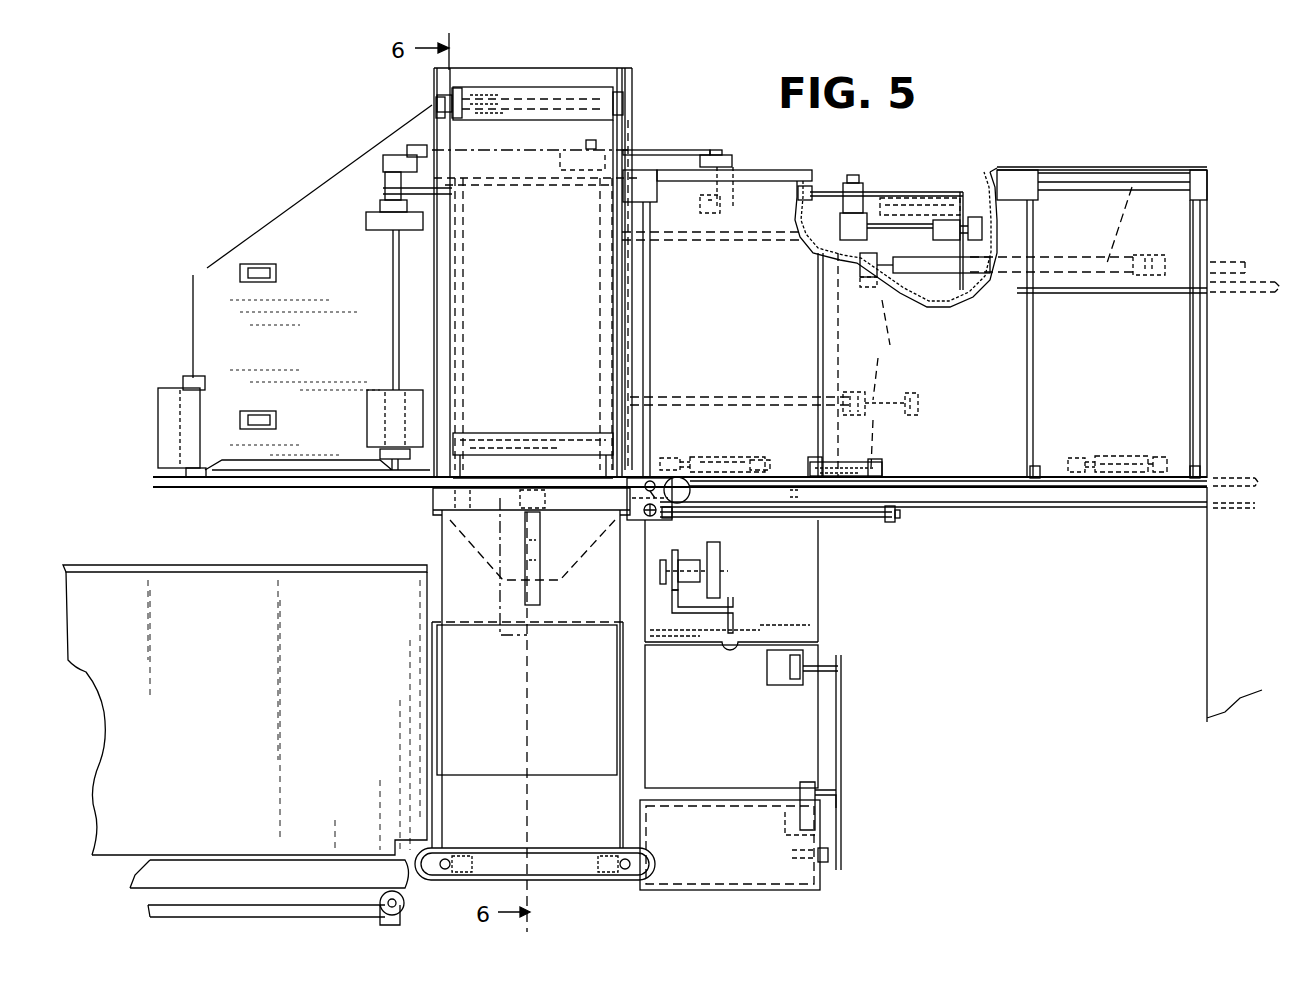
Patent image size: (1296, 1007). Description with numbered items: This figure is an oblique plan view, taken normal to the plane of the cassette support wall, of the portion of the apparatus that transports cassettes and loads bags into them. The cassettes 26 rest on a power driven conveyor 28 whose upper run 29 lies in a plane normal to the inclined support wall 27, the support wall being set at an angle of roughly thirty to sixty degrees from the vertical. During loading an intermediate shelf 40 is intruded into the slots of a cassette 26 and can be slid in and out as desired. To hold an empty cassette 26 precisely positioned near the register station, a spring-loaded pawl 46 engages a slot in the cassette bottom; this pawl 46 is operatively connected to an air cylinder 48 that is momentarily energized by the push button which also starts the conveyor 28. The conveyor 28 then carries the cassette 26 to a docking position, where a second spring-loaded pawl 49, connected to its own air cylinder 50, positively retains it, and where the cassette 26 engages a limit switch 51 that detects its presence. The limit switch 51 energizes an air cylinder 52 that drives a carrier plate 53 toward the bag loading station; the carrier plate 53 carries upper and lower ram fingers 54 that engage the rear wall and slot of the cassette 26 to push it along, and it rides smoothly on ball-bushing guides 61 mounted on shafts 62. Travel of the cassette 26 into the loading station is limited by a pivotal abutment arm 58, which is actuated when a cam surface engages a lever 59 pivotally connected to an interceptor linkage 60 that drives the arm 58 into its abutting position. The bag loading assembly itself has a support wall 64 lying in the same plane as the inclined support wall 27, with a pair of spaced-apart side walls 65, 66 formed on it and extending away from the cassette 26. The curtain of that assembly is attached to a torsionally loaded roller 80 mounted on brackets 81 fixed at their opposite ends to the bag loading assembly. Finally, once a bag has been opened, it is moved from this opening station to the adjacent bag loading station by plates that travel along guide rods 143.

The cassette 26 is at (610, 186).
The inclined support wall 27 is at (994, 178).
The power driven conveyor 28 is at (1079, 512).
The upper run of conveyor 29 is at (1130, 488).
The intermediate shelf 40 is at (1127, 294).
The pawl 46 is at (1060, 468).
The air cylinder 48 is at (1128, 458).
The spring-loaded pawl 49 is at (664, 460).
The air cylinder 50 is at (730, 457).
The limit switch 51 is at (643, 500).
The air cylinder 52 is at (1130, 172).
The carrier plate 53 is at (884, 341).
The ram fingers 54 is at (808, 185).
The pivotal abutment arm 58 is at (420, 188).
The lever 59 is at (716, 150).
The interceptor linkage 60 is at (656, 158).
The ball-bushing guides 61 is at (862, 212).
The shafts 62 is at (743, 232).
The support wall 64 is at (614, 137).
The side wall 65 is at (440, 104).
The side wall 66 is at (631, 120).
The torsionally loaded roller 80 is at (560, 95).
The brackets 81 is at (447, 95).
The guide rods 143 is at (791, 513).